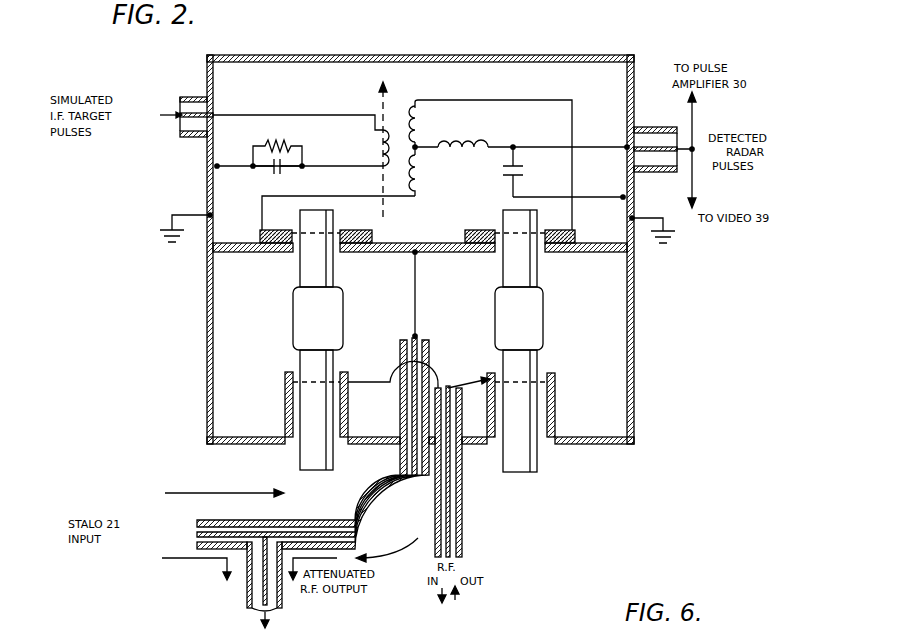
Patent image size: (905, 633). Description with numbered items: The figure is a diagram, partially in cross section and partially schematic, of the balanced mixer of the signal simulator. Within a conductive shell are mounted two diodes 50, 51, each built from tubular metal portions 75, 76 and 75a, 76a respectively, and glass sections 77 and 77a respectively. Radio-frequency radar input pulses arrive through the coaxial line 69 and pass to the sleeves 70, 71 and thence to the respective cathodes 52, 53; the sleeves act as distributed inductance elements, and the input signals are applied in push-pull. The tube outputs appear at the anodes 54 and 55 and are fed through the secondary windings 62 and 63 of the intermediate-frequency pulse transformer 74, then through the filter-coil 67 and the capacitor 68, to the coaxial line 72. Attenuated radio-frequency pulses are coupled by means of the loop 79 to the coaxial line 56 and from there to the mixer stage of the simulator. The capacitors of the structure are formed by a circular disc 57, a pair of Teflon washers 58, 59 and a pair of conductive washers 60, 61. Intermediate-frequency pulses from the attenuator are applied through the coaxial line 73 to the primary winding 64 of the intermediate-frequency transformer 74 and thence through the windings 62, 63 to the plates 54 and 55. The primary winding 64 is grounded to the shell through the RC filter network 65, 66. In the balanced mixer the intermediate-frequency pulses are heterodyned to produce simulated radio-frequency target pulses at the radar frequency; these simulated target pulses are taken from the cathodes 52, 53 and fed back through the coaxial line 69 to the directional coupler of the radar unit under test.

The diode 50 is at (311, 340).
The diode 51 is at (529, 344).
The cathode 52 is at (332, 382).
The cathode 53 is at (540, 382).
The anode 54 is at (352, 222).
The anode 55 is at (488, 230).
The coaxial line 56 is at (433, 350).
The circular disc 57 is at (236, 254).
The Teflon washer 58 is at (392, 243).
The Teflon washer 59 is at (446, 254).
The conductive washer 60 is at (562, 230).
The conductive washer 61 is at (276, 224).
The secondary winding 62 is at (412, 178).
The secondary winding 63 is at (412, 110).
The primary winding 64 is at (378, 160).
The RC filter network resistor 65 is at (274, 140).
The RC filter network capacitor 66 is at (284, 172).
The filter-coil 67 is at (486, 138).
The capacitor 68 is at (522, 172).
The coaxial line 69 is at (465, 492).
The sleeve 70 is at (285, 408).
The sleeve 71 is at (556, 406).
The coaxial line 72 is at (668, 127).
The coaxial line 73 is at (197, 97).
The intermediate-frequency pulse transformer 74 is at (398, 90).
The tubular metal portion 75 is at (328, 276).
The tubular metal portion 75a is at (530, 272).
The tubular metal portion 76 is at (306, 368).
The tubular metal portion 76a is at (537, 466).
The glass section 77 is at (296, 322).
The glass section 77a is at (533, 326).
The loop 79 is at (418, 288).